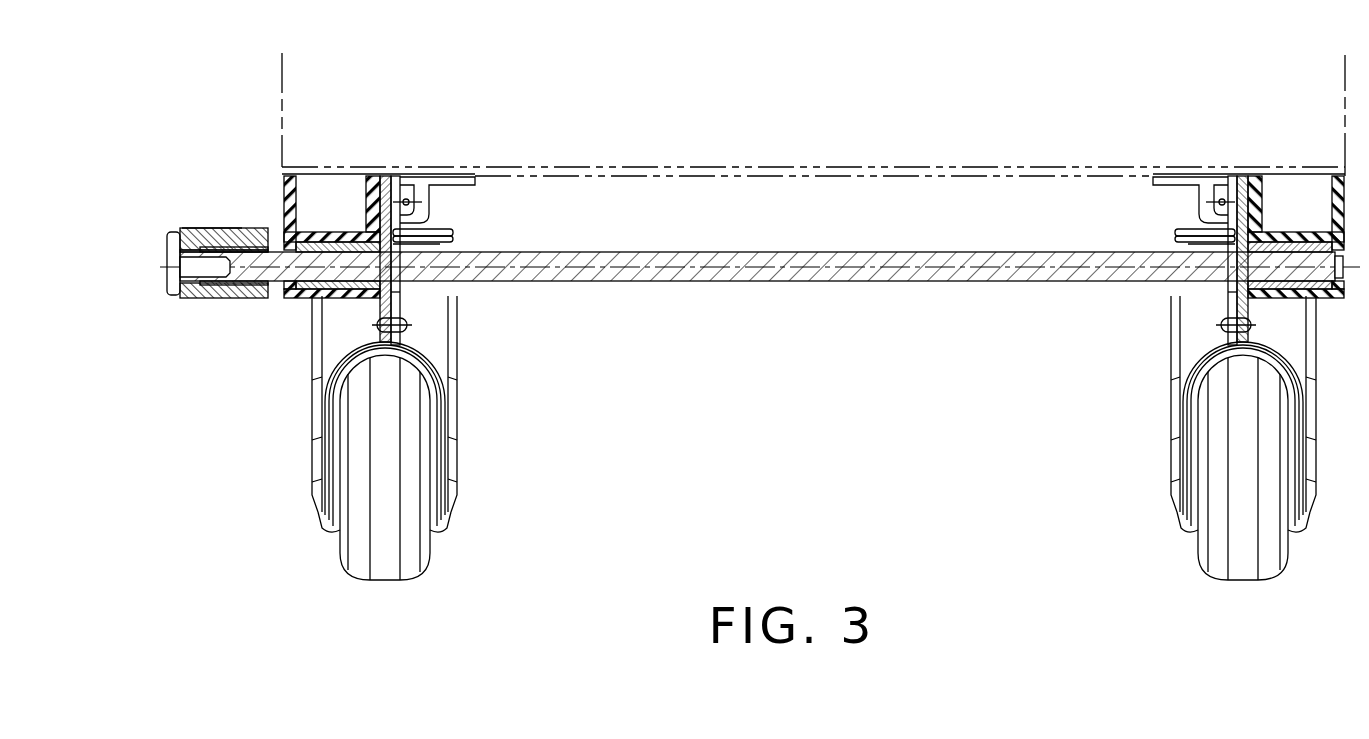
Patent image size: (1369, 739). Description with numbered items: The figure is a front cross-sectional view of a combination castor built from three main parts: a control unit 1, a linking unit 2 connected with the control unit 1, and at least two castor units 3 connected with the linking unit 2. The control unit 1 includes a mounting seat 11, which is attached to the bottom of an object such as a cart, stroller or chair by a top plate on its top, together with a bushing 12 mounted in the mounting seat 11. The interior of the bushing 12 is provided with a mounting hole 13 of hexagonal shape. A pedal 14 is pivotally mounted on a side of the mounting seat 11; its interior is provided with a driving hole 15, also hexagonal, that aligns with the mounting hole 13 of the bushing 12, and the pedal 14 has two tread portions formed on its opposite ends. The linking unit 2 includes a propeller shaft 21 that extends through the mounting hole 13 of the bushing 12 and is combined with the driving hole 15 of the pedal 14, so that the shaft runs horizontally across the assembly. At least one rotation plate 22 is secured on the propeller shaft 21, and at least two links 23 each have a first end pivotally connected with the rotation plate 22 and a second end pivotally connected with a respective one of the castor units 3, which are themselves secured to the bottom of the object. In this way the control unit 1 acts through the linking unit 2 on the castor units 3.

The control unit 1 is at (745, 209).
The linking unit 2 is at (831, 128).
The castor unit 3 is at (488, 455).
The mounting seat 11 is at (285, 203).
The bushing 12 is at (325, 312).
The mounting hole 13 is at (308, 296).
The pedal 14 is at (195, 232).
The driving hole 15 is at (215, 300).
The propeller shaft 21 is at (782, 282).
The rotation plate 22 is at (400, 305).
The link 23 is at (393, 290).